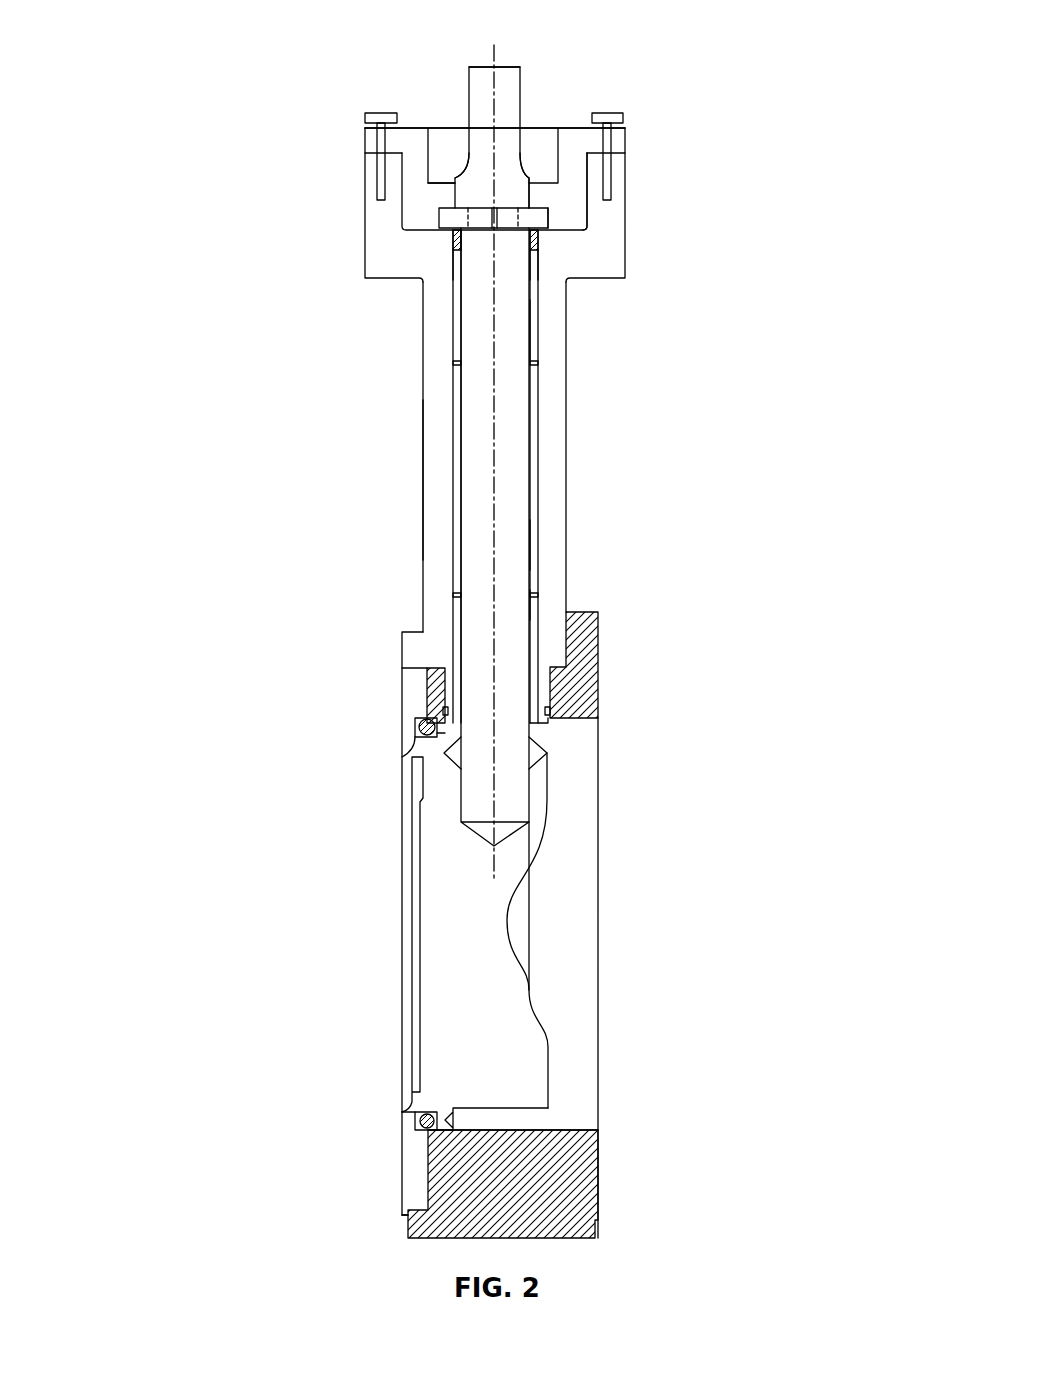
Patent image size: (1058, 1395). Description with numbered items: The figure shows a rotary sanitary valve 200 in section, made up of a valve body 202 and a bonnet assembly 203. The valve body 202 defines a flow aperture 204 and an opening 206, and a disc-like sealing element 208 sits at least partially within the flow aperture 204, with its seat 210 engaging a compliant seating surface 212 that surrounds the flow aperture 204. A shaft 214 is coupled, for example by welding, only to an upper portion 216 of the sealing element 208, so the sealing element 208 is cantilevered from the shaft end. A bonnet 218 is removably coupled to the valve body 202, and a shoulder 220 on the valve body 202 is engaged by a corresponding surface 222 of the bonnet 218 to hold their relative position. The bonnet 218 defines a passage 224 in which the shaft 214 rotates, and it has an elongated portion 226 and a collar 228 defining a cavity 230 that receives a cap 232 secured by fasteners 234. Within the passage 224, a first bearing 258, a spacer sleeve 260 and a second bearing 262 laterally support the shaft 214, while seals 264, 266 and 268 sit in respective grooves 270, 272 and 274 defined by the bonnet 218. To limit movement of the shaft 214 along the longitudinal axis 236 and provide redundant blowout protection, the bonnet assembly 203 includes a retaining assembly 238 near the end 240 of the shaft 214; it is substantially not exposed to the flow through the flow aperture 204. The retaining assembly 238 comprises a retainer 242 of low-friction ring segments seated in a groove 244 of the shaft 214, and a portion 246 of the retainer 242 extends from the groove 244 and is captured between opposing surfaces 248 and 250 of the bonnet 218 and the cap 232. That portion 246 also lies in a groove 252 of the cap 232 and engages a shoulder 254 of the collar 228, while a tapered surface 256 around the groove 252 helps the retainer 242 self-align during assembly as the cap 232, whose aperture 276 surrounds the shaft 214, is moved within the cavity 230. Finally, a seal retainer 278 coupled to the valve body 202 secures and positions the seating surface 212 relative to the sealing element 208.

The rotary sanitary valve 200 is at (290, 48).
The valve body 202 is at (590, 1197).
The bonnet assembly 203 is at (297, 336).
The flow aperture 204 is at (587, 1128).
The opening 206 is at (552, 685).
The sealing element 208 is at (538, 1067).
The seat 210 is at (432, 1112).
The seating surface 212 is at (415, 1118).
The shaft 214 is at (468, 428).
The upper portion 216 is at (562, 803).
The bonnet 218 is at (442, 490).
The shoulder 220 is at (435, 692).
The corresponding surface 222 is at (415, 640).
The passage 224 is at (450, 382).
The elongated portion 226 is at (553, 450).
The collar 228 is at (372, 238).
The cavity 230 is at (452, 190).
The cap 232 is at (370, 135).
The fasteners 234 is at (380, 113).
The longitudinal axis 236 is at (493, 52).
The retaining assembly 238 is at (443, 180).
The end 240 is at (469, 88).
The retainer 242 is at (452, 255).
The groove 244 is at (452, 214).
The portion 246 is at (445, 233).
The opposing surface 248 is at (572, 237).
The opposing surface 250 is at (540, 200).
The groove 252 is at (545, 212).
The shoulder 254 is at (535, 247).
The tapered surface 256 is at (562, 230).
The first bearing 258 is at (535, 607).
The spacer sleeve 260 is at (535, 547).
The second bearing 262 is at (535, 338).
The seal 264 is at (550, 712).
The seal 266 is at (538, 738).
The seal 268 is at (547, 250).
The groove 270 is at (428, 721).
The groove 272 is at (412, 747).
The groove 274 is at (453, 270).
The aperture 276 is at (458, 166).
The seal retainer 278 is at (395, 1148).